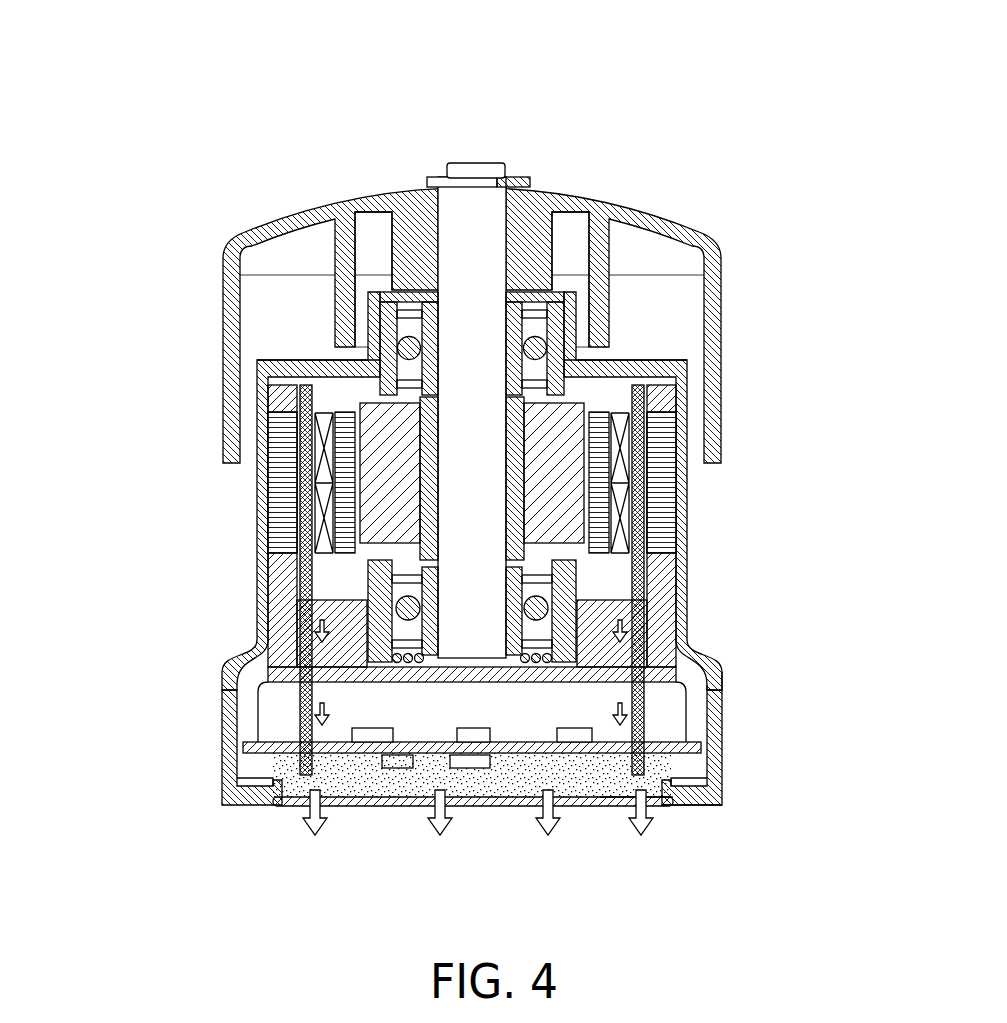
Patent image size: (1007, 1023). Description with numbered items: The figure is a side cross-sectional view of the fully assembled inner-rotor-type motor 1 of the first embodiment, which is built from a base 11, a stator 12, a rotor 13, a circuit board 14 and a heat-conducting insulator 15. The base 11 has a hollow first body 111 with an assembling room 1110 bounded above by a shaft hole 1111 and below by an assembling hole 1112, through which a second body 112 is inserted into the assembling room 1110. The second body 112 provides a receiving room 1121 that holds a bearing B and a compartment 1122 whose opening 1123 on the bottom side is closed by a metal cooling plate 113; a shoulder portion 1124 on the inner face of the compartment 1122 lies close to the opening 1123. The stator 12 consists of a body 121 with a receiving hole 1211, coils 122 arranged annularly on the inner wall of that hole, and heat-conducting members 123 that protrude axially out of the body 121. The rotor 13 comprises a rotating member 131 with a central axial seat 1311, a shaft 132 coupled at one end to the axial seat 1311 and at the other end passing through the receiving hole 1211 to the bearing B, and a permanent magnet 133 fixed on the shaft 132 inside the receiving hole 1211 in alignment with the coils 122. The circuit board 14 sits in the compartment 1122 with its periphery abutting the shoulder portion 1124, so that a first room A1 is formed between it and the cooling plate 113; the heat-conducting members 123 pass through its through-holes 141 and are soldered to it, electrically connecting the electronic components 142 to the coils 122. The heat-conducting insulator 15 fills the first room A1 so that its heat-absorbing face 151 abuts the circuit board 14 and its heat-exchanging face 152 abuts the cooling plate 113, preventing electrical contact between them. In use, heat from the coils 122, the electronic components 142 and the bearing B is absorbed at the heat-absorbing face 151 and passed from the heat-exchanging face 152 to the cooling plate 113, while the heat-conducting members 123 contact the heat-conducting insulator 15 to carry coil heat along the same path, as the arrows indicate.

The inner-rotor-type motor 1 is at (178, 197).
The base 11 is at (110, 758).
The first body 111 is at (257, 637).
The second body 112 is at (247, 712).
The cooling plate 113 is at (337, 810).
The assembling room 1110 is at (262, 372).
The shaft hole 1111 is at (410, 288).
The assembling hole 1112 is at (689, 815).
The receiving room 1121 is at (350, 586).
The compartment 1122 is at (270, 785).
The opening 1123 is at (706, 760).
The shoulder portion 1124 is at (690, 743).
The stator 12 is at (815, 458).
The body 121 is at (660, 580).
The receiving hole 1211 is at (350, 566).
The coils 122 is at (650, 452).
The heat-conducting members 123 is at (640, 497).
The rotor 13 is at (536, 148).
The rotating member 131 is at (647, 213).
The axial seat 1311 is at (555, 235).
The shaft 132 is at (458, 193).
The permanent magnet 133 is at (380, 457).
The circuit board 14 is at (513, 805).
The through-holes 141 is at (653, 805).
The electronic components 142 is at (620, 805).
The heat-conducting insulator 15 is at (297, 795).
The heat-absorbing face 151 is at (338, 805).
The heat-exchanging face 152 is at (398, 805).
The first room A1 is at (268, 791).
The bearing B is at (563, 340).